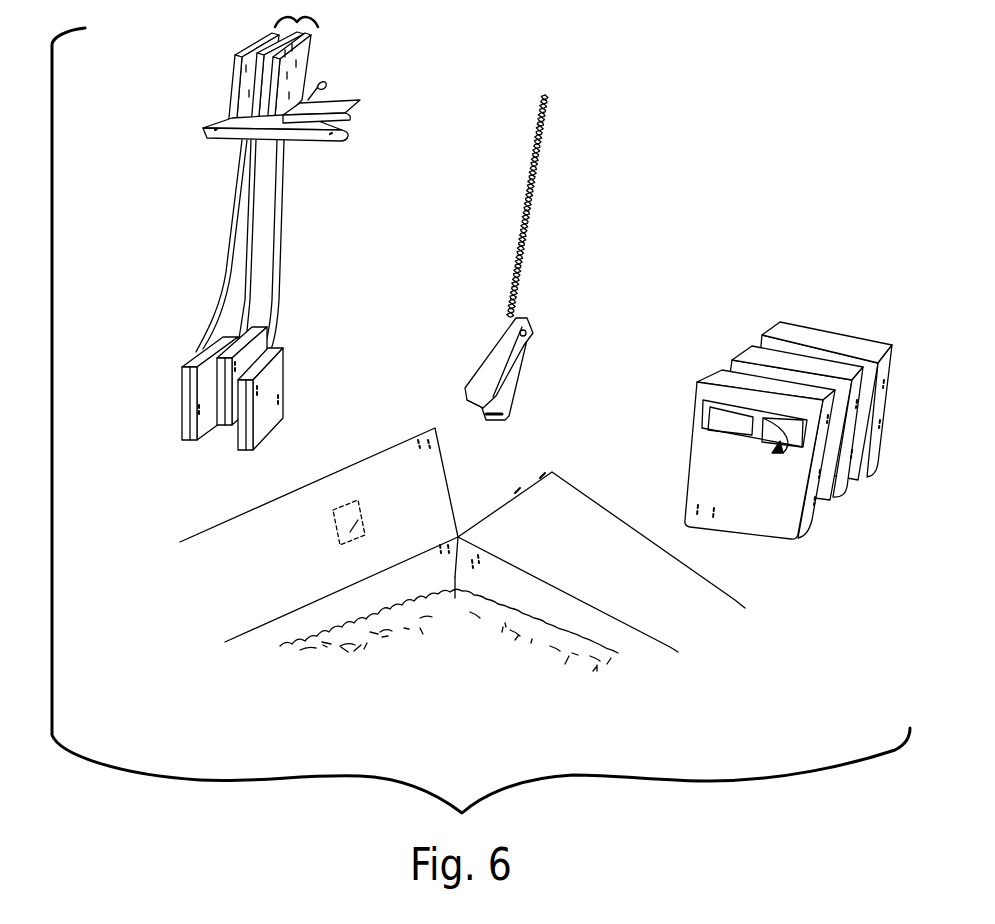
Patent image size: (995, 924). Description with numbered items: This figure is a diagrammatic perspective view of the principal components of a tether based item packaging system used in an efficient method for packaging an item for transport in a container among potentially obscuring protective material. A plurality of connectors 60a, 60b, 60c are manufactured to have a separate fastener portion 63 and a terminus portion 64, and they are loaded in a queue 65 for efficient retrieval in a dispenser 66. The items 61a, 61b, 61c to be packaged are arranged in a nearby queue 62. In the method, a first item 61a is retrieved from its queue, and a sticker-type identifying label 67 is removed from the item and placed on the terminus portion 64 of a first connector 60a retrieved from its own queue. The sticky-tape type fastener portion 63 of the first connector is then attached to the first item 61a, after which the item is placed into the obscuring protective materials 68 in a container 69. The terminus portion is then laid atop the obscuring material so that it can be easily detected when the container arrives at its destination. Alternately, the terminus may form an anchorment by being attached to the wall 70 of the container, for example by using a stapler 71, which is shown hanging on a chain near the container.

The first connector 60a is at (226, 282).
The connector 60b is at (247, 314).
The connector 60c is at (272, 283).
The first item 61a is at (746, 418).
The item 61b is at (742, 350).
The item 61c is at (790, 328).
The queue 62 is at (777, 418).
The fastener portion 63 is at (182, 435).
The terminus portion 64 is at (235, 89).
The queue 65 is at (297, 22).
The dispenser 66 is at (354, 113).
The identifying label 67 is at (780, 457).
The obscuring protective materials 68 is at (453, 640).
The container 69 is at (690, 620).
The wall 70 is at (340, 536).
The stapler 71 is at (525, 343).